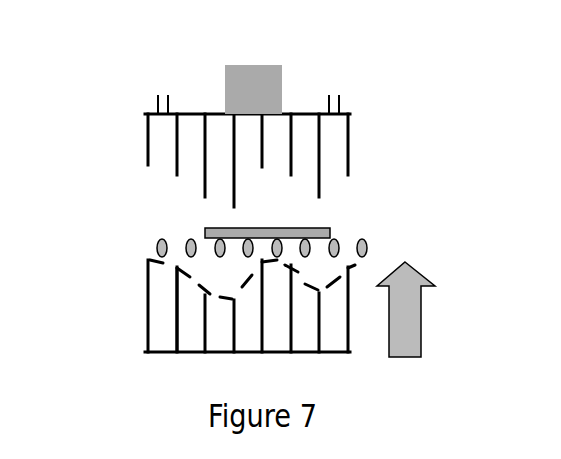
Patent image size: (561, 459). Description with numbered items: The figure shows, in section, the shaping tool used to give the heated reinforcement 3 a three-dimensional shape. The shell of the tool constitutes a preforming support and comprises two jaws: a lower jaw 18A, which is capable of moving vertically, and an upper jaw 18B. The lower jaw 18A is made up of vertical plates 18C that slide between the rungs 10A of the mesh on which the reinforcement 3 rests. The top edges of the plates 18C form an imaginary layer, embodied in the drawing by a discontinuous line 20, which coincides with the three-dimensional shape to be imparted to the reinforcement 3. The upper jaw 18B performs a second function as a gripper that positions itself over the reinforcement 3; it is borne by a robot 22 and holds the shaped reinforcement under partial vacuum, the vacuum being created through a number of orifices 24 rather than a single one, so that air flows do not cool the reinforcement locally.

The reinforcement 3 is at (350, 228).
The rungs of the mesh 10A is at (155, 248).
The lower jaw 18A is at (145, 343).
The upper jaw 18B is at (350, 138).
The vertical plates 18C is at (177, 323).
The discontinuous line 20 is at (330, 289).
The robot 22 is at (225, 65).
The orifices 24 is at (187, 97).